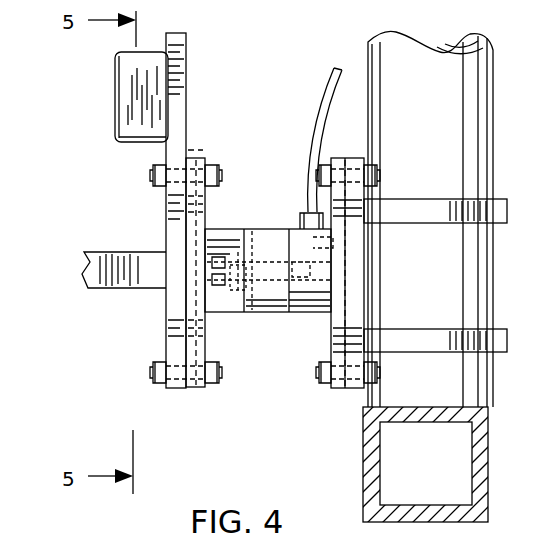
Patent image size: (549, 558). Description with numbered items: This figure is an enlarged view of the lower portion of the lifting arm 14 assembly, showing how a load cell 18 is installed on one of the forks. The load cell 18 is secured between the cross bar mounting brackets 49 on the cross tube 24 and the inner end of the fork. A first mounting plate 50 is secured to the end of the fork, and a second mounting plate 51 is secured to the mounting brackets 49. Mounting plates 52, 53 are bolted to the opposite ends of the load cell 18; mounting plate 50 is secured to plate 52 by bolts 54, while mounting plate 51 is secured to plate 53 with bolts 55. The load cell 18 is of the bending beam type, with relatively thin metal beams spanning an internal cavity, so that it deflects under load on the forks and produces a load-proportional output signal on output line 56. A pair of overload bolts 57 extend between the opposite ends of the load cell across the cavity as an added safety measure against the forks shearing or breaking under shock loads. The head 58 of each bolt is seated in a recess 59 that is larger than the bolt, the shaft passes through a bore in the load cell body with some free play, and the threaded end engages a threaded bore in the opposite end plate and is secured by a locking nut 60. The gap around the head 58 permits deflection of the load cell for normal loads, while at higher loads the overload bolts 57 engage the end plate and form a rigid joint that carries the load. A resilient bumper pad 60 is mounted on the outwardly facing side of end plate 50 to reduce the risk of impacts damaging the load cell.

The lifting arm 14 is at (365, 445).
The load cell 18 is at (268, 208).
The cross tube 24 is at (471, 125).
The cross bar mounting brackets 49 is at (485, 210).
The first mounting plate 50 is at (168, 200).
The second mounting plate 51 is at (358, 158).
The mounting plate 52 is at (195, 158).
The mounting plate 53 is at (343, 385).
The bolts 54 is at (152, 172).
The bolts 55 is at (379, 172).
The output line 56 is at (320, 98).
The overload bolts 57 is at (237, 295).
The head 58 is at (166, 283).
The recess 59 is at (239, 252).
The locking nut 60 is at (125, 97).